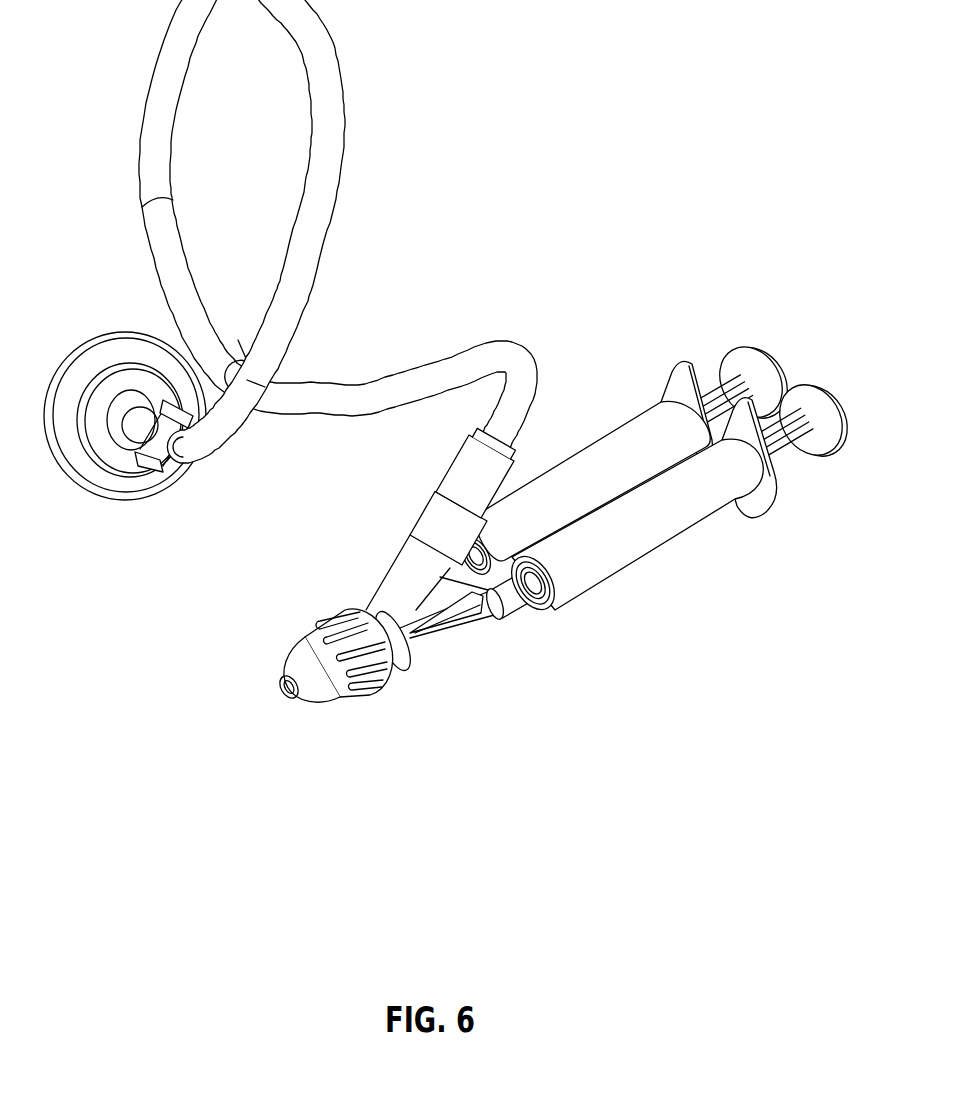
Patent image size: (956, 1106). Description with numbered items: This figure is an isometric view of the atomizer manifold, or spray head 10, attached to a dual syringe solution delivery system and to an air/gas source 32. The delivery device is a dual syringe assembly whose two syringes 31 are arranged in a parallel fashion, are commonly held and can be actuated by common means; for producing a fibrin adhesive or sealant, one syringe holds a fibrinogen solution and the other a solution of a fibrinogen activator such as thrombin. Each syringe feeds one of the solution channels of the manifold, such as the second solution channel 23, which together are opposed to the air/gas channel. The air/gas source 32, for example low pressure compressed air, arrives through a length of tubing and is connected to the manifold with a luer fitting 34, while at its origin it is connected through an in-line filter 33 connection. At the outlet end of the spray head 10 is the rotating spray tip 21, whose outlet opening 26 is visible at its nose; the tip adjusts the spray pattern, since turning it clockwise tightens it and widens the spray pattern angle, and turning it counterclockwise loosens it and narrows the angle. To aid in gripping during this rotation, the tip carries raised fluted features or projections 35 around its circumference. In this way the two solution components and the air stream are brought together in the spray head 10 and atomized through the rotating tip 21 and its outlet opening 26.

The spray head 10 is at (433, 633).
The rotating spray tip 21 is at (323, 703).
The second solution channel 23 is at (515, 610).
The outlet orifice 26 is at (287, 690).
The syringes 31 is at (633, 419).
The air/gas source 32 is at (358, 383).
The in-line filter 33 is at (133, 497).
The luer fitting 34 is at (418, 522).
The raised fluted features 35 is at (358, 690).